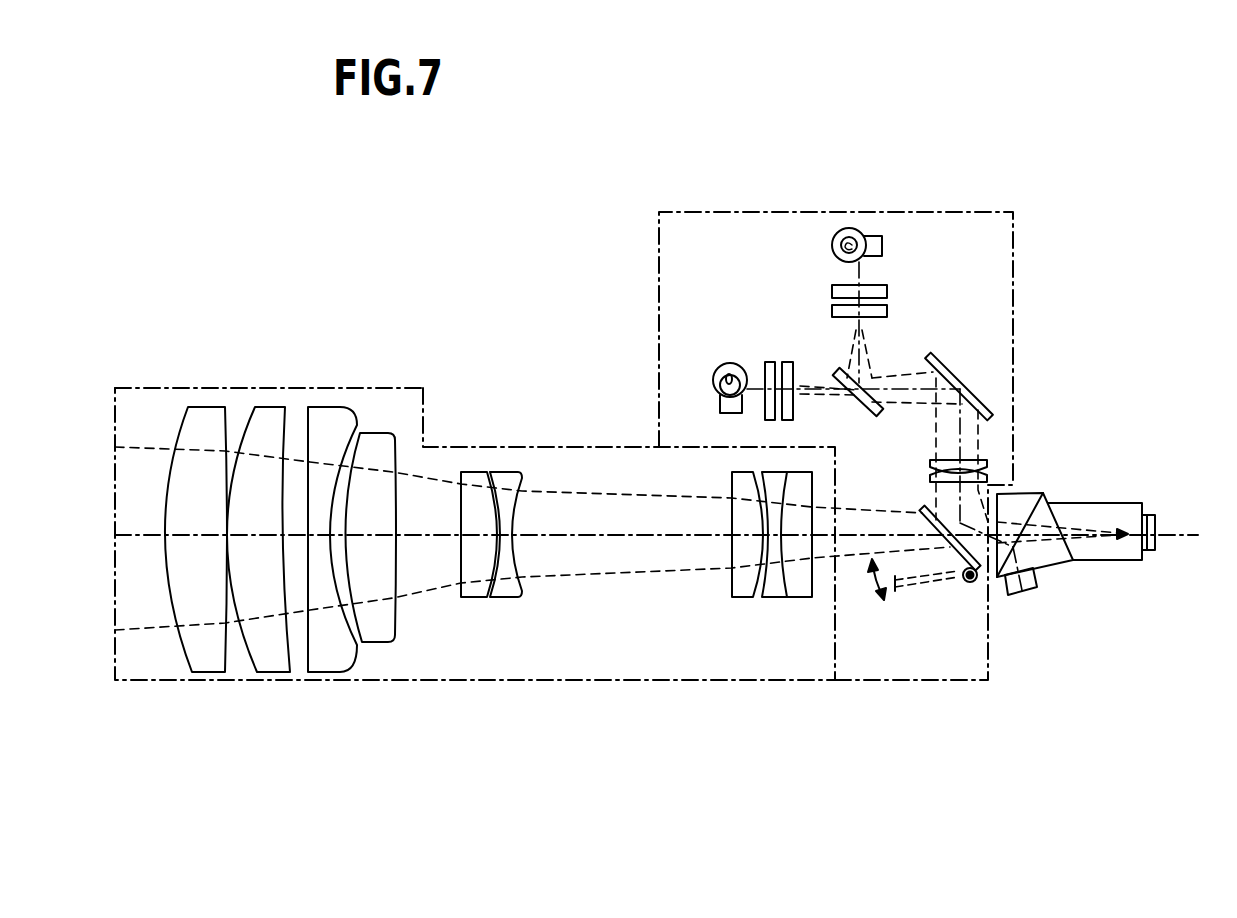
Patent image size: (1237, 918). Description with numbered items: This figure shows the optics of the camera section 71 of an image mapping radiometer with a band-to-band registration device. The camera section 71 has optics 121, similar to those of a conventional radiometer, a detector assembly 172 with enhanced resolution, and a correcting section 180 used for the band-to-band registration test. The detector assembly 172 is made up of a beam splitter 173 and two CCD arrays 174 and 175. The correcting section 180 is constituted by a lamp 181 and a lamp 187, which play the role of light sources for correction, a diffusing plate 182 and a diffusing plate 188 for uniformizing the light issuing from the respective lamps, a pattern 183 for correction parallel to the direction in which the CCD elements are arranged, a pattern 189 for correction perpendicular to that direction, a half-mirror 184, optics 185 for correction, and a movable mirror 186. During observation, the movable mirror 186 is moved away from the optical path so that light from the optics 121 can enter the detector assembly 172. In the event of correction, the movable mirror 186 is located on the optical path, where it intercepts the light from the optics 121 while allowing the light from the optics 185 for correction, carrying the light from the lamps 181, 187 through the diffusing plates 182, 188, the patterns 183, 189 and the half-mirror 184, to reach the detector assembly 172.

The camera section 71 is at (500, 205).
The optics 121 is at (255, 387).
The detector assembly 172 is at (1118, 562).
The beam splitter 173 is at (1047, 497).
The CCD array 174 is at (1155, 522).
The CCD array 175 is at (1033, 589).
The correcting section 180 is at (775, 212).
The lamp 181 is at (883, 248).
The diffusing plate 182 is at (887, 290).
The pattern 183 is at (887, 312).
The half-mirror 184 is at (838, 371).
The optics for correction 185 is at (928, 472).
The movable mirror 186 is at (932, 578).
The lamp 187 is at (725, 367).
The diffusing plate 188 is at (769, 362).
The pattern 189 is at (789, 420).